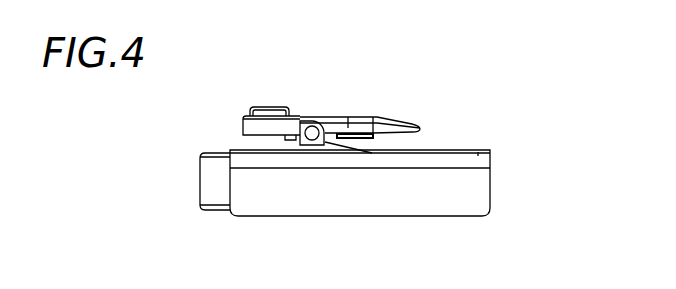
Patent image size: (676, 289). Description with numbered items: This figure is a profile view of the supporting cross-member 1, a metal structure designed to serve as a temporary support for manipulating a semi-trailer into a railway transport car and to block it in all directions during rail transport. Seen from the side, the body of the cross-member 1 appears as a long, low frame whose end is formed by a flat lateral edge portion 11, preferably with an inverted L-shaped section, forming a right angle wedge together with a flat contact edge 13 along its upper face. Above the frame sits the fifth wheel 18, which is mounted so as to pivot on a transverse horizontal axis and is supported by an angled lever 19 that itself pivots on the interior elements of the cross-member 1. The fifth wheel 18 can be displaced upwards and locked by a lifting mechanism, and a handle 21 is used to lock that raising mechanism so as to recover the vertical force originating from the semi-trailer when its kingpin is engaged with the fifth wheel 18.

The supporting cross-member 1 is at (509, 109).
The flat lateral edge portion 11 is at (418, 200).
The flat contact edge 13 is at (352, 154).
The fifth wheel 18 is at (376, 105).
The angled lever 19 is at (318, 145).
The handle 21 is at (252, 94).